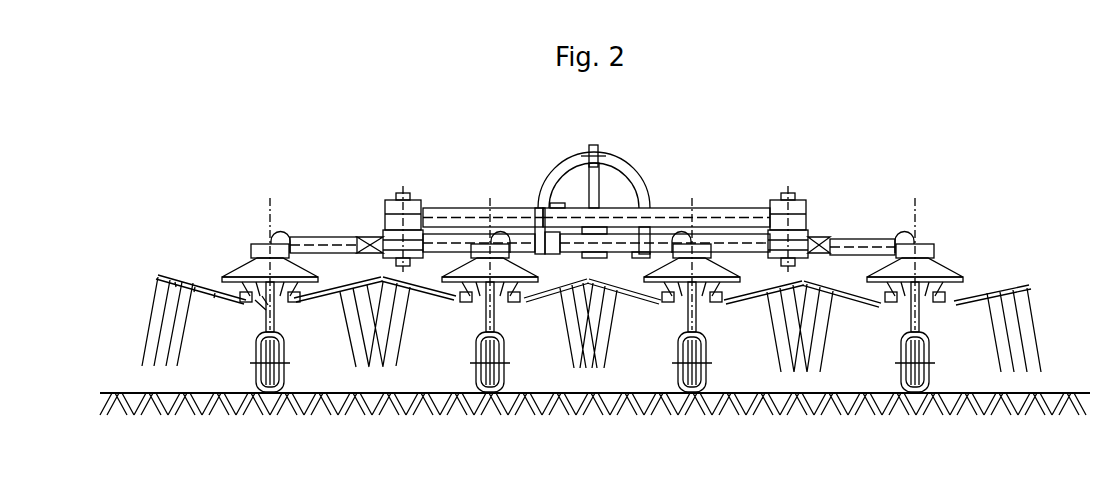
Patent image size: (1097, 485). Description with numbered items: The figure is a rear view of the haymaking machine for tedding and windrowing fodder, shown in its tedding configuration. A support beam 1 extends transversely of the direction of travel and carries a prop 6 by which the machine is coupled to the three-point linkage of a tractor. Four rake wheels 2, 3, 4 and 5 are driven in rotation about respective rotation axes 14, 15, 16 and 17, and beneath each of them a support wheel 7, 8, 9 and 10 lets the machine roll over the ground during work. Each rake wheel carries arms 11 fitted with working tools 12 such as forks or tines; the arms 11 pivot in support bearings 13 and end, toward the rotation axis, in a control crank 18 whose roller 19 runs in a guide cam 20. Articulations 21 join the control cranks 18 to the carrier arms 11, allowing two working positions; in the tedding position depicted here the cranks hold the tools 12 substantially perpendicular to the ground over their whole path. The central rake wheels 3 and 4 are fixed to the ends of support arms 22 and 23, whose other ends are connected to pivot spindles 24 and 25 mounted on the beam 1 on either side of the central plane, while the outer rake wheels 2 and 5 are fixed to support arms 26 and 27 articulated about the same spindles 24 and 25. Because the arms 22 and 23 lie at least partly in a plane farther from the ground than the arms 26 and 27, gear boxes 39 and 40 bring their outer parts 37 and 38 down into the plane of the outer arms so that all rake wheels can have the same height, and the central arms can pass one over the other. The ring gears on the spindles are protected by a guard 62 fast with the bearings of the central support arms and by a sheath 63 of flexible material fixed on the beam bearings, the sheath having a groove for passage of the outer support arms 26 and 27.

The support beam 1 is at (443, 240).
The rake wheel 2 is at (228, 350).
The rake wheel 3 is at (460, 352).
The rake wheel 4 is at (668, 352).
The rake wheel 5 is at (886, 352).
The prop 6 is at (622, 172).
The support wheel 7 is at (278, 378).
The support wheel 8 is at (498, 378).
The support wheel 9 is at (702, 378).
The support wheel 10 is at (924, 380).
The arms 11 is at (206, 282).
The working tools 12 is at (148, 326).
The support bearings 13 is at (240, 300).
The rotation axis 14 is at (270, 232).
The rotation axis 15 is at (495, 318).
The rotation axis 16 is at (697, 318).
The rotation axis 17 is at (918, 226).
The control crank 18 is at (296, 302).
The roller 19 is at (264, 304).
The guide cam 20 is at (478, 304).
The articulations 21 is at (302, 300).
The support arm 22 is at (508, 208).
The support arm 23 is at (695, 208).
The pivot spindle 24 is at (398, 200).
The pivot spindle 25 is at (790, 200).
The support arm 26 is at (325, 237).
The support arm 27 is at (866, 239).
The outer part 37 is at (620, 252).
The outer part 38 is at (536, 250).
The gear box 39 is at (557, 203).
The gear box 40 is at (540, 208).
The guard 62 is at (385, 221).
The sheath 63 is at (806, 250).